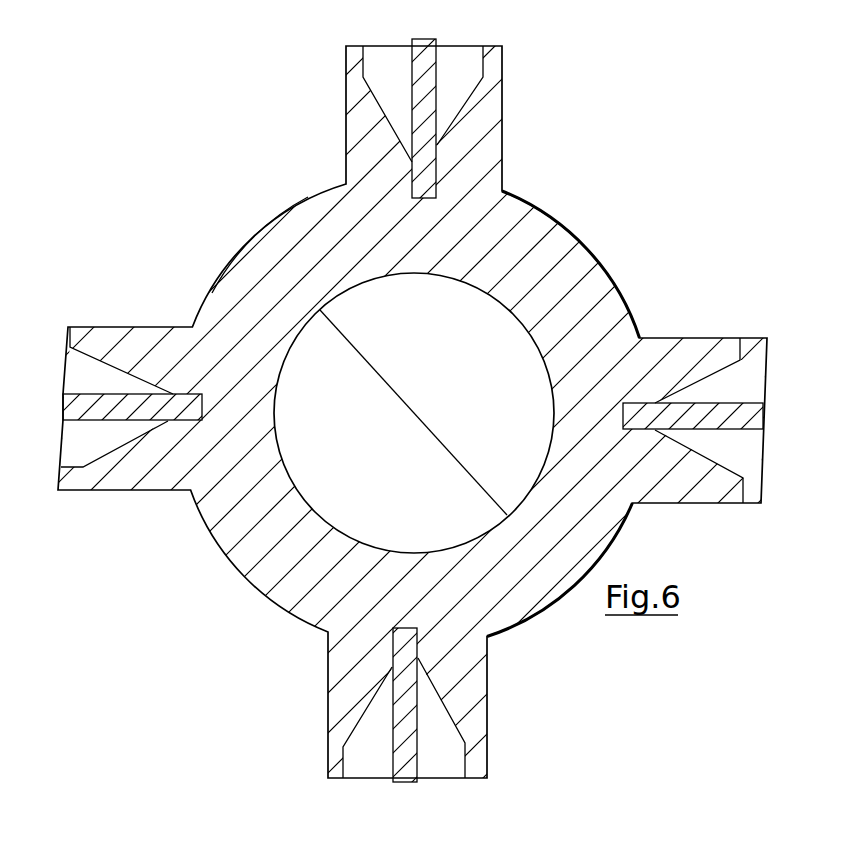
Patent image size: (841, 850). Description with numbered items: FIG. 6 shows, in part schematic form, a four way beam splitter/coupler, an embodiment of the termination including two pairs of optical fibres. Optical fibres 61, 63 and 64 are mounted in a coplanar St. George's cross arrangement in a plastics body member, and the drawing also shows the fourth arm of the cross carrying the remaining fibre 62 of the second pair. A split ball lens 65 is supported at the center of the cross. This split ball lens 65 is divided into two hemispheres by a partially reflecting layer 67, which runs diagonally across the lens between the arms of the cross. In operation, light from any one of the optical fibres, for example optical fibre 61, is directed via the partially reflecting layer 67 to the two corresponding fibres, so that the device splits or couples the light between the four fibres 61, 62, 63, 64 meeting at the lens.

The optical fibre 61 is at (447, 141).
The second radial port 62 is at (692, 383).
The optical fibre 63 is at (433, 677).
The optical fibre 64 is at (160, 440).
The split ball lens 65 is at (537, 347).
The partially reflecting layer 67 is at (493, 503).